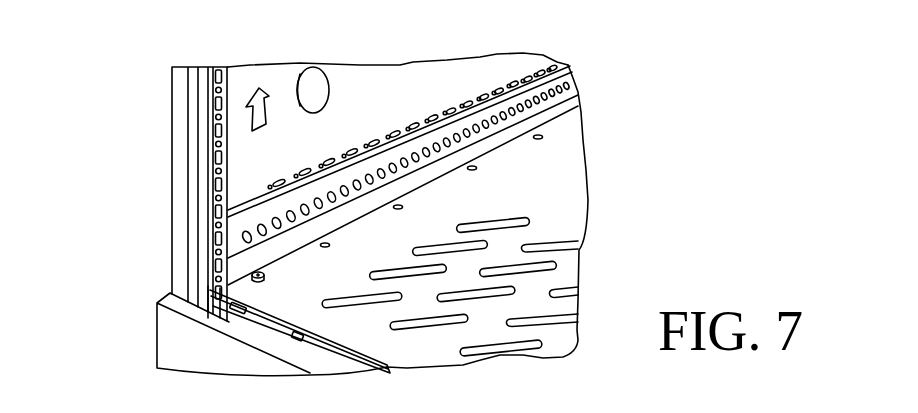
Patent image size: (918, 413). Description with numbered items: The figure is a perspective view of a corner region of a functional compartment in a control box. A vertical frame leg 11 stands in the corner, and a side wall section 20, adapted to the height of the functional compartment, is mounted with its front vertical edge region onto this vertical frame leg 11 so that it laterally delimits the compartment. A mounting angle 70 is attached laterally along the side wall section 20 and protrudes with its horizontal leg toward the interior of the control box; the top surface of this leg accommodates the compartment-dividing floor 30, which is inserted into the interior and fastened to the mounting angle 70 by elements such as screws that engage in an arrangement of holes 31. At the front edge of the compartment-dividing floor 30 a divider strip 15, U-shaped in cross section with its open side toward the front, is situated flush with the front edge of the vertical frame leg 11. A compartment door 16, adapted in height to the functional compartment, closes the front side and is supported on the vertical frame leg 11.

The vertical frame leg 11 is at (178, 158).
The divider strip 15 is at (222, 292).
The compartment door 16 is at (168, 355).
The side wall section 20 is at (397, 77).
The compartment-dividing floor 30 is at (560, 183).
The arrangement of holes 31 is at (266, 278).
The mounting angle 70 is at (572, 68).